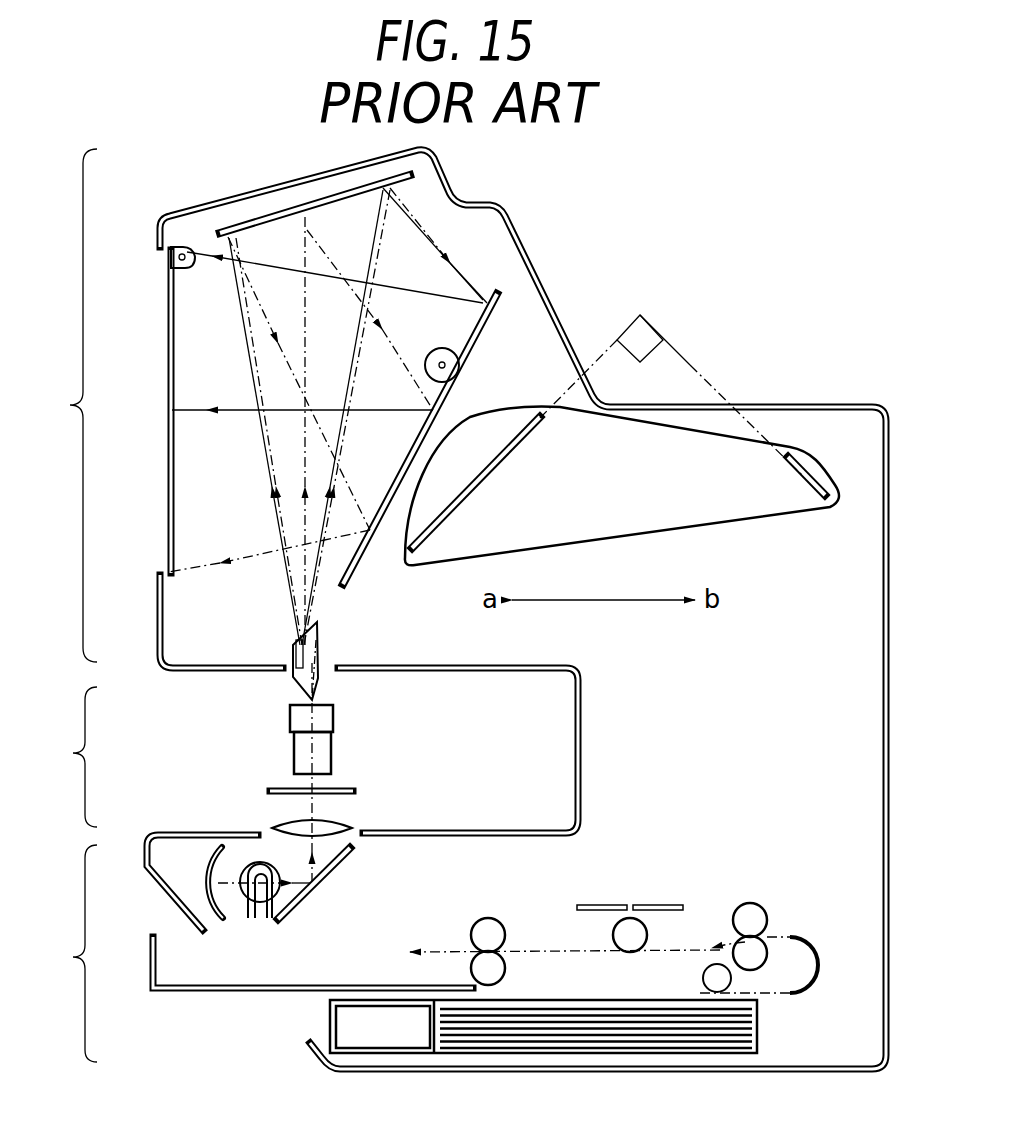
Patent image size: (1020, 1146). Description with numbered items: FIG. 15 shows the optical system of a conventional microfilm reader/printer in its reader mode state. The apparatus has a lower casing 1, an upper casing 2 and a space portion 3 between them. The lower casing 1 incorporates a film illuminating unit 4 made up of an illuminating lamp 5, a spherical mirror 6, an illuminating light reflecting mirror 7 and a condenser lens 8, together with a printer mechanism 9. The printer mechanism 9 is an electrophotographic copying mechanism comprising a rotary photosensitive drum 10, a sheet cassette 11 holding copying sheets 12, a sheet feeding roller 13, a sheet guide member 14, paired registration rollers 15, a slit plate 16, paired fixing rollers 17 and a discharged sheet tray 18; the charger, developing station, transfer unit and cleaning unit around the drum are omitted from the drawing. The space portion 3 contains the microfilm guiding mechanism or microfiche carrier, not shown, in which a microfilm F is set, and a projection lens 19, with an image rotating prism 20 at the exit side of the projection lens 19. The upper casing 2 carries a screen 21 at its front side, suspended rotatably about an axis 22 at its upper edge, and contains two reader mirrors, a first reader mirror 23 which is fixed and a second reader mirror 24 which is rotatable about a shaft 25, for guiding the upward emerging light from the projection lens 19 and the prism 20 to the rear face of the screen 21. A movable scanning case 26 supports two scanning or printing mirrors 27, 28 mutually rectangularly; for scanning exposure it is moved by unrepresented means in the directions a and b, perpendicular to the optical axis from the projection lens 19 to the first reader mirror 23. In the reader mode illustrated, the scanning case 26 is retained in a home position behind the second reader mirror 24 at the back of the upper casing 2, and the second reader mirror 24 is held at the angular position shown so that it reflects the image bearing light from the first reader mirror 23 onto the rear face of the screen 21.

The lower casing 1 is at (70, 953).
The upper casing 2 is at (68, 405).
The space portion 3 is at (70, 757).
The film illuminating unit 4 is at (243, 855).
The illuminating lamp 5 is at (260, 915).
The spherical mirror 6 is at (222, 912).
The illuminating light reflecting mirror 7 is at (297, 912).
The condenser lens 8 is at (340, 826).
The printer mechanism 9 is at (707, 898).
The electrophotographic rotary photosensitive drum 10 is at (640, 935).
The sheet cassette 11 is at (470, 1054).
The copying sheets 12 is at (565, 1050).
The sheet feeding roller 13 is at (703, 978).
The sheet guide member 14 is at (815, 982).
The paired registration rollers 15 is at (757, 918).
The slit plate 16 is at (660, 905).
The paired fixing rollers 17 is at (488, 932).
The discharged sheet tray 18 is at (222, 990).
The projection lens 19 is at (292, 715).
The image rotating prism 20 is at (318, 683).
The screen 21 is at (168, 352).
The axis 22 is at (187, 262).
The first reader mirror 23 is at (273, 210).
The second reader mirror 24 is at (410, 452).
The shaft 25 is at (444, 366).
The scanning case 26 is at (643, 500).
The scanning mirror 27 is at (478, 482).
The scanning mirror 28 is at (798, 470).
The microfilm F is at (272, 790).